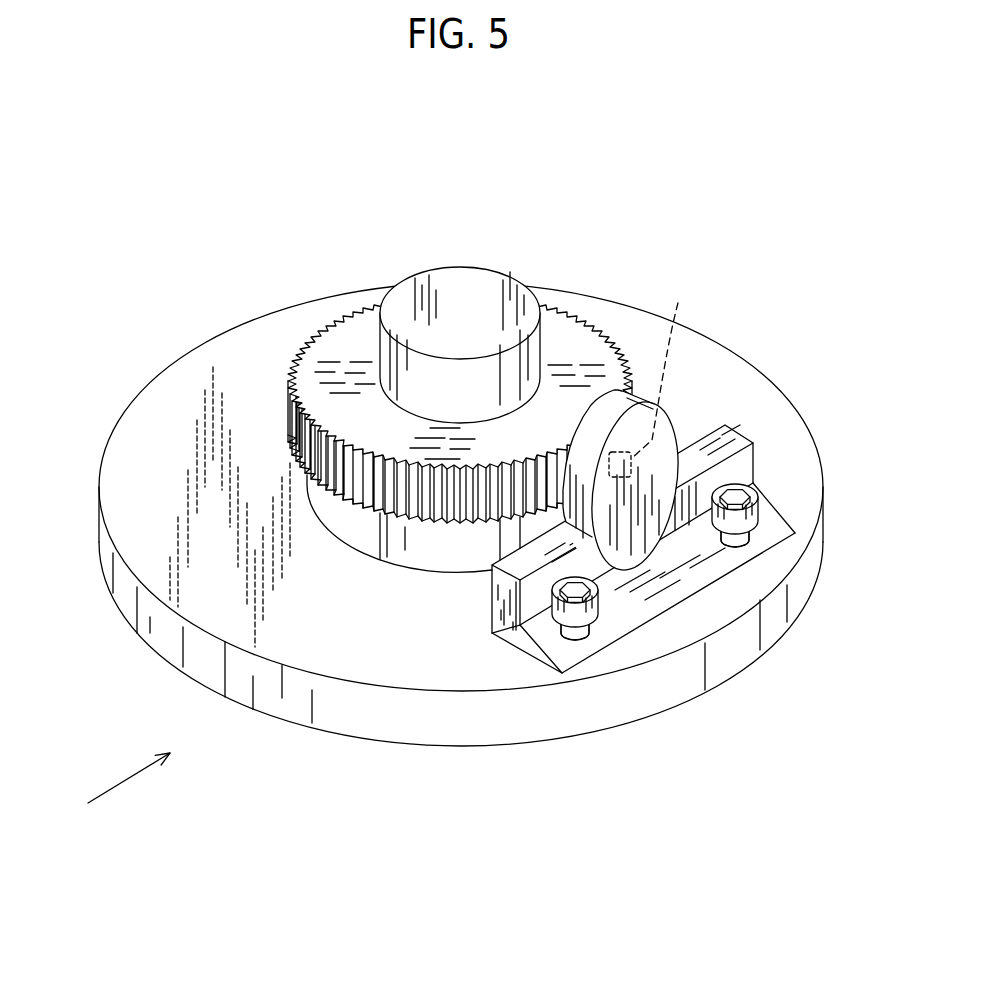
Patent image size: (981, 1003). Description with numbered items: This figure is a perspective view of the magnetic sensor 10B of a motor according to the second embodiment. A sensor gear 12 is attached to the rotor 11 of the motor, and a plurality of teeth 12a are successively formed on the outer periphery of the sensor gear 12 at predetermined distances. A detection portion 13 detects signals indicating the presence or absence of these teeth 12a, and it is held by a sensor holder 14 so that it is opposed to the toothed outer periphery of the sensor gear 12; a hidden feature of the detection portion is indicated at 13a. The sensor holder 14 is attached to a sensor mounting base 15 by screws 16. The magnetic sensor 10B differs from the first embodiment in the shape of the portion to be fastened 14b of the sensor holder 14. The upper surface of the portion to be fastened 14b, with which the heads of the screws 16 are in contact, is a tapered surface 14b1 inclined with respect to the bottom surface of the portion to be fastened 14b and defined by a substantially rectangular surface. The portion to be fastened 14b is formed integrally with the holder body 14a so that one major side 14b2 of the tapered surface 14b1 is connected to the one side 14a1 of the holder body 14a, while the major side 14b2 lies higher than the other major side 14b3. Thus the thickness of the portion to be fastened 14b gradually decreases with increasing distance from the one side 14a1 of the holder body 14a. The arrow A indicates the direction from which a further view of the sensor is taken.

The magnetic sensor 10B is at (337, 225).
The rotor 11 is at (467, 293).
The sensor gear 12 is at (350, 350).
The teeth 12a is at (323, 457).
The detection portion 13 is at (676, 430).
The hole of worm 13a is at (663, 381).
The sensor holder 14 is at (478, 797).
The holder body 14a is at (507, 622).
The one side of the holder body 14a1 is at (743, 461).
The portion to be fastened 14b is at (537, 653).
The tapered surface 14b1 is at (772, 527).
The major side 14b2 is at (753, 488).
The other major side 14b3 is at (790, 540).
The sensor mounting base 15 is at (167, 504).
The screws 16 is at (750, 533).
The arrow A is at (123, 783).